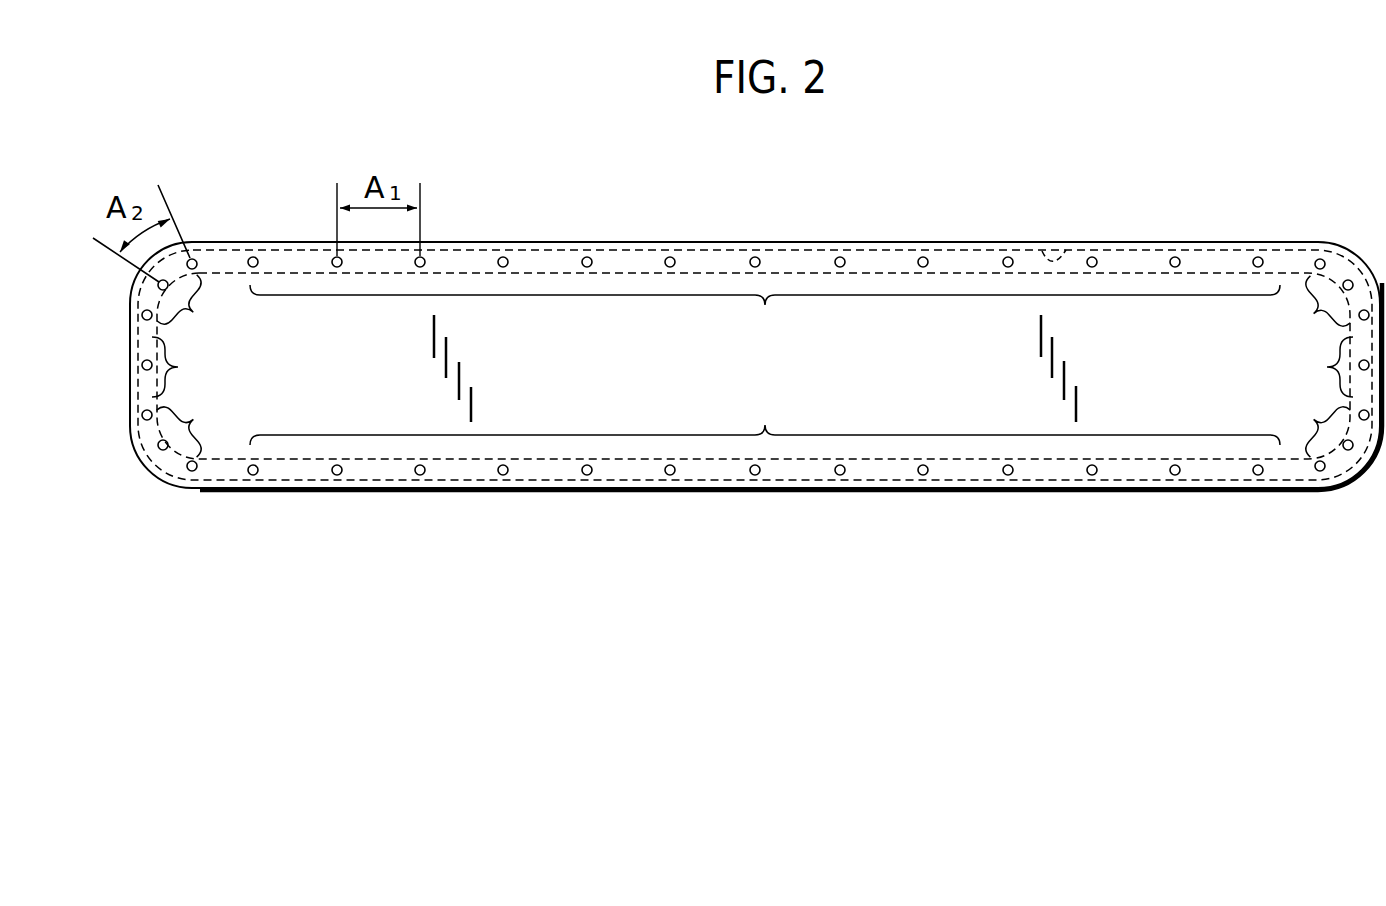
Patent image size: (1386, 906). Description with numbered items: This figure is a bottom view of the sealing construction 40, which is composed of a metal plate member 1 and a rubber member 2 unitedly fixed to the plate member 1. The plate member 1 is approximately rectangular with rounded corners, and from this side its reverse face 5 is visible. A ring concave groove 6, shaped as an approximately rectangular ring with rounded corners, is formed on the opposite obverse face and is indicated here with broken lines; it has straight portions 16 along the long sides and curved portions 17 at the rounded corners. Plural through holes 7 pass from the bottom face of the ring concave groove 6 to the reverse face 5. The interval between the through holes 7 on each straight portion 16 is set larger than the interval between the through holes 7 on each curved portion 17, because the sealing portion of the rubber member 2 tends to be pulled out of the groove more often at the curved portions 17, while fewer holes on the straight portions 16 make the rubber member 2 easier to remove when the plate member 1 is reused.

The plate member 1 is at (519, 240).
The rubber member 2 is at (586, 475).
The reverse face 5 is at (960, 278).
The ring concave groove 6 is at (1068, 248).
The through holes 7 is at (762, 257).
The straight portions 16 is at (752, 365).
The curved portions 17 is at (754, 366).
The sealing construction 40 is at (1283, 204).